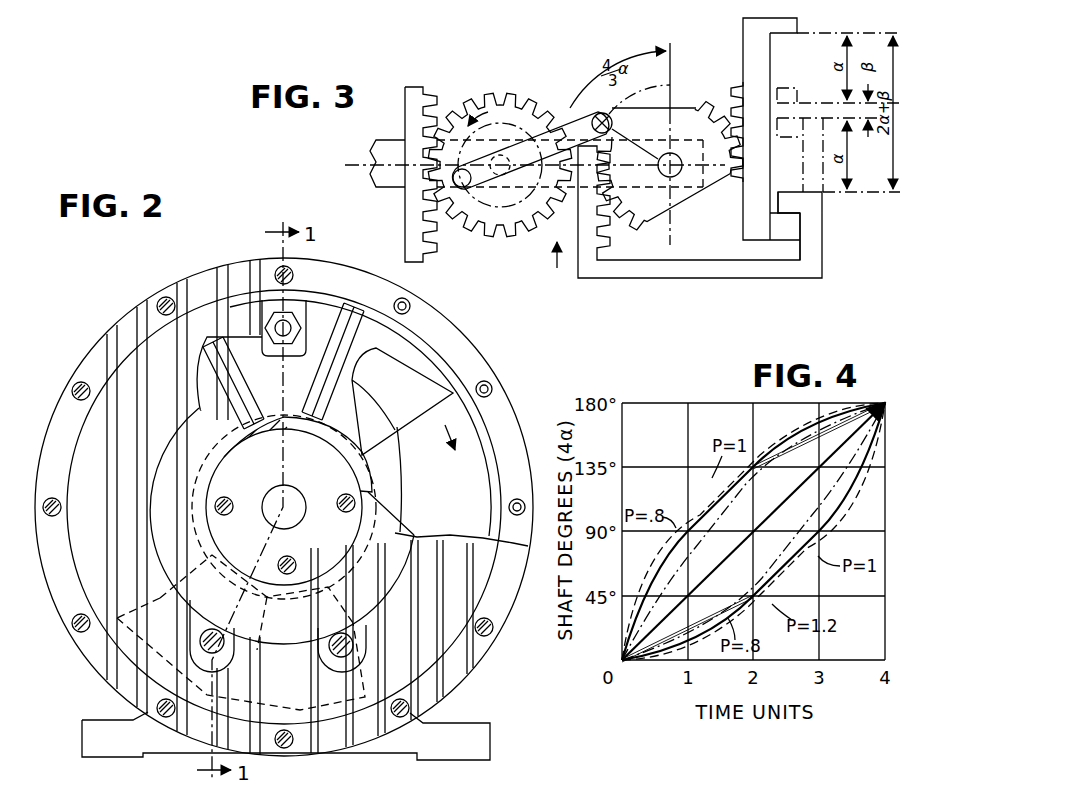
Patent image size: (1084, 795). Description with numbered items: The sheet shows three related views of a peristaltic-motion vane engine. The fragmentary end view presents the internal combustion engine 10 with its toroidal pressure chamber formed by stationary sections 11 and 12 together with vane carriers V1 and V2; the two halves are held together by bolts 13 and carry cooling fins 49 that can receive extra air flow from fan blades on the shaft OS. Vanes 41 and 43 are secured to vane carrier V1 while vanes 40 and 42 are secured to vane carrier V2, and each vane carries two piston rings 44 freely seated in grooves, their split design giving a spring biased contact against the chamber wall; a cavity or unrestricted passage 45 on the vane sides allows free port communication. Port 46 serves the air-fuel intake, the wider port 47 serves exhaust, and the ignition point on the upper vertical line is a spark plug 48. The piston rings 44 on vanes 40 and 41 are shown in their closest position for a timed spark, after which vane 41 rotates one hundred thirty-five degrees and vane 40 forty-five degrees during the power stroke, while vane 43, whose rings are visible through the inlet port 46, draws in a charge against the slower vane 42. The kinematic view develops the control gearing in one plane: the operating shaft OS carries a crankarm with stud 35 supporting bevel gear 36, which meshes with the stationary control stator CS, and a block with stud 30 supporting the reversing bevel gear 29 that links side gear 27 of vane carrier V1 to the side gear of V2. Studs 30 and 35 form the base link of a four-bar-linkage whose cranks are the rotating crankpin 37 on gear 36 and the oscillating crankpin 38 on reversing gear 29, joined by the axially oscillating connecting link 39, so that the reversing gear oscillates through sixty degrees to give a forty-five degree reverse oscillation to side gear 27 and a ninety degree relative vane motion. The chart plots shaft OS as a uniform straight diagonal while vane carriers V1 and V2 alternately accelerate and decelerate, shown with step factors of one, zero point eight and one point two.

In FIG. 2, the drive unit housing with mounting base 10 is at (457, 711).
In FIG. 2, the stationary section 11 is at (86, 347).
In FIG. 2, the stationary section 12 is at (478, 342).
In FIG. 2, the cover bolts 13 is at (71, 394).
In FIG. 3, the differential side gear 27 is at (604, 221).
In FIG. 3, the reversing bevel gear 29 is at (688, 106).
In FIG. 3, the stud 30 is at (676, 180).
In FIG. 3, the stud 35 is at (503, 208).
In FIG. 3, the bevel gear 36 is at (467, 100).
In FIG. 3, the rotating crankpin 37 is at (462, 206).
In FIG. 3, the oscillating crankpin 38 is at (586, 104).
In FIG. 3, the connecting link 39 is at (559, 120).
In FIG. 2, the vane 40 is at (276, 392).
In FIG. 3, the vane 40 is at (801, 230).
In FIG. 2, the vane 41 is at (370, 432).
In FIG. 3, the vane 41 is at (796, 203).
In FIG. 2, the vane 42 is at (294, 684).
In FIG. 3, the vane 42 is at (802, 22).
In FIG. 2, the vane 43 is at (176, 638).
In FIG. 2, the piston rings 44 is at (349, 305).
In FIG. 2, the cavity or unrestricted passage 45 is at (374, 387).
In FIG. 2, the port 46 is at (205, 629).
In FIG. 2, the port 47 is at (335, 633).
In FIG. 2, the spark plug 48 is at (270, 303).
In FIG. 2, the fins 49 is at (129, 328).
In FIG. 3, the control stator CS is at (416, 87).
In FIG. 2, the operating shaft OS is at (299, 522).
In FIG. 3, the operating shaft OS is at (386, 139).
In FIG. 4, the operating shaft OS is at (696, 582).
In FIG. 2, the vane carrier V1 is at (320, 469).
In FIG. 3, the vane carrier V1 is at (702, 279).
In FIG. 4, the vane carrier V1 is at (690, 505).
In FIG. 2, the vane carrier V2 is at (408, 484).
In FIG. 3, the vane carrier V2 is at (742, 33).
In FIG. 4, the vane carrier V2 is at (832, 522).